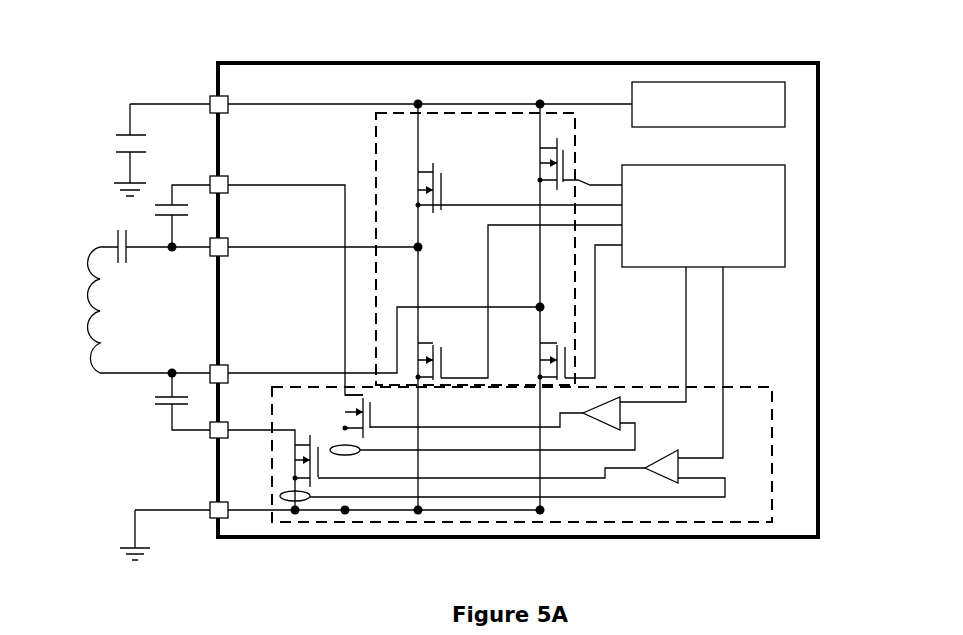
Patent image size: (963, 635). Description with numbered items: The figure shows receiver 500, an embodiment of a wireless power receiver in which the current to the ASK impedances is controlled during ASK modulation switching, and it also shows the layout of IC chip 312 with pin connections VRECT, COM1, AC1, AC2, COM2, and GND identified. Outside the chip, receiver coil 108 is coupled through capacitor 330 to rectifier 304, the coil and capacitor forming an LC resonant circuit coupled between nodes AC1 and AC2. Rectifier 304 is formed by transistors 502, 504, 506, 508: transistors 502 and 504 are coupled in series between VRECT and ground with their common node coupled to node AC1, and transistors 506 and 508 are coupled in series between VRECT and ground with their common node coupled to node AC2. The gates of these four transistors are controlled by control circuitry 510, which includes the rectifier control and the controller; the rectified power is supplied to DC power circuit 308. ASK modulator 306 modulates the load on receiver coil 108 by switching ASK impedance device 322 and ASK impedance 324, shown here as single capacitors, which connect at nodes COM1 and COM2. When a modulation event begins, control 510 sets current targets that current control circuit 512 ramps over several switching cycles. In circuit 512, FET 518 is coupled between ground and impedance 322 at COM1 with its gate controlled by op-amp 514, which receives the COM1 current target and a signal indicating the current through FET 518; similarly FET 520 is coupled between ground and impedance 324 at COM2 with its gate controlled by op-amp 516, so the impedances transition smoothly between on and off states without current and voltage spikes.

The receiver 500 is at (140, 60).
The receiver coil 108 is at (82, 312).
The ASK modulator 306 is at (800, 368).
The DC power circuit 308 is at (692, 87).
The IC chip 312 is at (290, 306).
The ASK impedance device 322 is at (176, 204).
The ASK impedance 324 is at (157, 397).
The capacitor 330 is at (115, 237).
The rectifier 304 is at (499, 188).
The transistor 502 is at (437, 200).
The transistor 504 is at (428, 351).
The transistor 506 is at (563, 164).
The transistor 508 is at (532, 361).
The control circuitry 510 is at (743, 258).
The current control circuit 512 is at (743, 508).
The op-amp 514 is at (616, 401).
The op-amp 516 is at (663, 468).
The FET 518 is at (346, 426).
The FET 520 is at (296, 455).